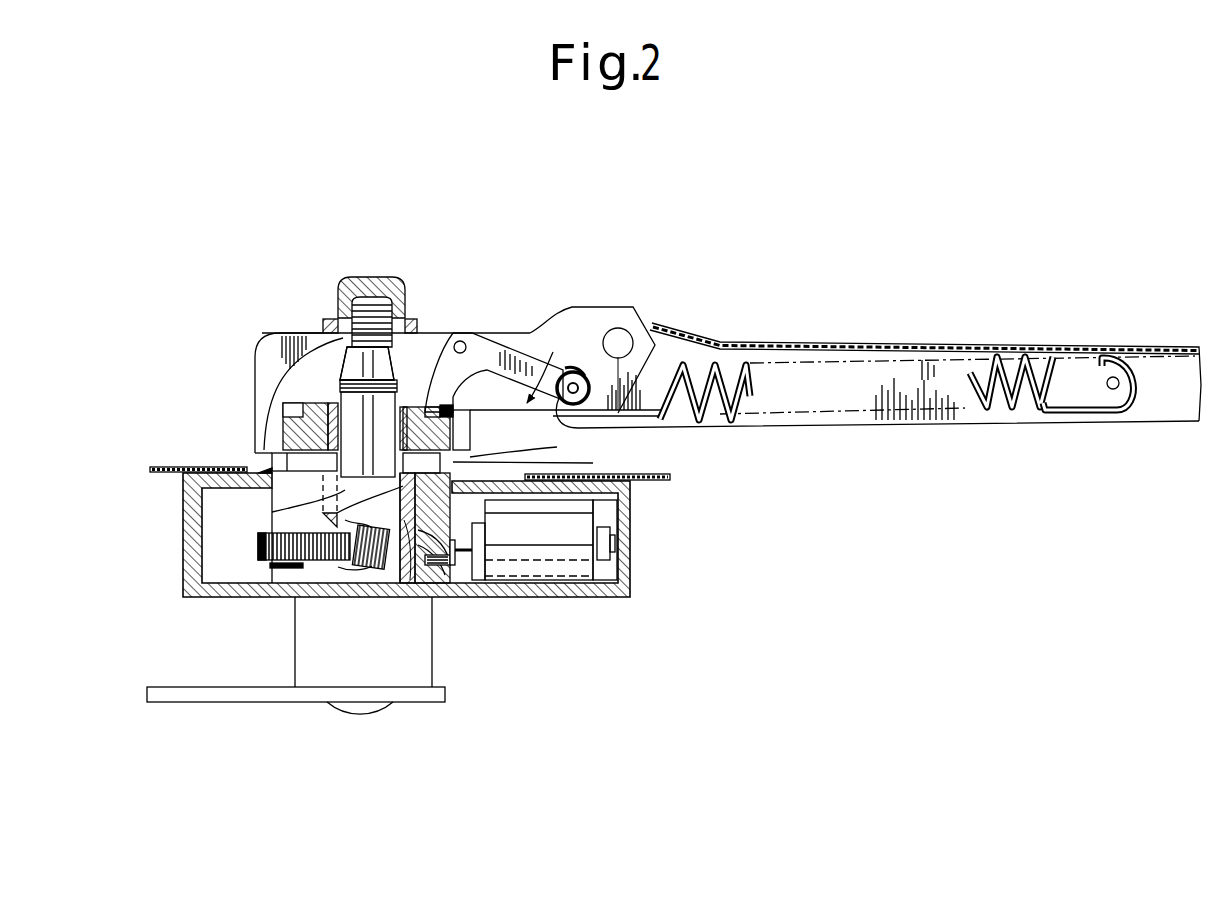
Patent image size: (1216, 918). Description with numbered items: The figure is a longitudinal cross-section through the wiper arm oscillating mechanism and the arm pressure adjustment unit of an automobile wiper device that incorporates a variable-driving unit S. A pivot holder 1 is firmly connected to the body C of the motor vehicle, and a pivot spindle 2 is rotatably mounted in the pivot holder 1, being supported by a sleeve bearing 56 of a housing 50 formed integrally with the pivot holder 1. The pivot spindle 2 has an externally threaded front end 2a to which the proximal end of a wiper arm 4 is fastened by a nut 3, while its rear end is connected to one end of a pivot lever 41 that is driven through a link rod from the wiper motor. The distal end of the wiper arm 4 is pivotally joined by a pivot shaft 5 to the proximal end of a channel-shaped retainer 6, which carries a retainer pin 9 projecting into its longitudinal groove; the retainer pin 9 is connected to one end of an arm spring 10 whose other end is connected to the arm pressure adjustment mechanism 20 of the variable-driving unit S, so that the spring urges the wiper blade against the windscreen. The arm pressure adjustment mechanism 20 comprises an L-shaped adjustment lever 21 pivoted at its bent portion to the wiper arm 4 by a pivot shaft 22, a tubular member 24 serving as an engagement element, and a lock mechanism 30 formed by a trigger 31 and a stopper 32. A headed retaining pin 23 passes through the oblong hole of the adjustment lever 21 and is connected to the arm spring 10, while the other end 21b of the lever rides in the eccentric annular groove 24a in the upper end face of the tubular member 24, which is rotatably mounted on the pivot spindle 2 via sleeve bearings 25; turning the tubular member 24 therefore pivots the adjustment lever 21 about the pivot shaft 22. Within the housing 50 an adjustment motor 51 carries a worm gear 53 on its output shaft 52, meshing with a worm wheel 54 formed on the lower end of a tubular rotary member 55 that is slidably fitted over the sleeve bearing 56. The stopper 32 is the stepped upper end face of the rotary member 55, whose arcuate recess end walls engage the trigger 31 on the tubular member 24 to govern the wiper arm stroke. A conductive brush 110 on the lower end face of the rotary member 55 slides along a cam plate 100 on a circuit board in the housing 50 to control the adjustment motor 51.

The pivot holder 1 is at (272, 507).
The pivot spindle 2 is at (345, 360).
The externally threaded front end 2a is at (330, 320).
The nut 3 is at (368, 277).
The wiper arm 4 is at (275, 348).
The pivot shaft 5 is at (618, 343).
The retainer 6 is at (865, 342).
The retainer pin 9 is at (1105, 375).
The arm spring 10 is at (748, 400).
The arm pressure adjustment mechanism 20 is at (540, 285).
The adjustment lever 21 is at (490, 352).
The other end of adjustment lever 21b is at (470, 430).
The pivot shaft 22 is at (462, 340).
The retaining pin 23 is at (577, 372).
The tubular member 24 is at (280, 436).
The annular groove 24a is at (292, 408).
The sleeve bearings 25 is at (337, 398).
The lock mechanism 30 is at (580, 433).
The trigger 31 is at (527, 442).
The stopper 32 is at (620, 448).
The pivot lever 41 is at (163, 702).
The housing 50 is at (540, 588).
The adjustment motor 51 is at (573, 565).
The output shaft 52 is at (455, 570).
The worm gear 53 is at (367, 568).
The worm wheel 54 is at (258, 550).
The tubular rotary member 55 is at (420, 588).
The sleeve bearing 56 is at (432, 570).
The cam plate 100 is at (451, 702).
The conductive brush 110 is at (446, 590).
The body of motor vehicle C is at (660, 482).
The variable-driving unit S is at (636, 565).